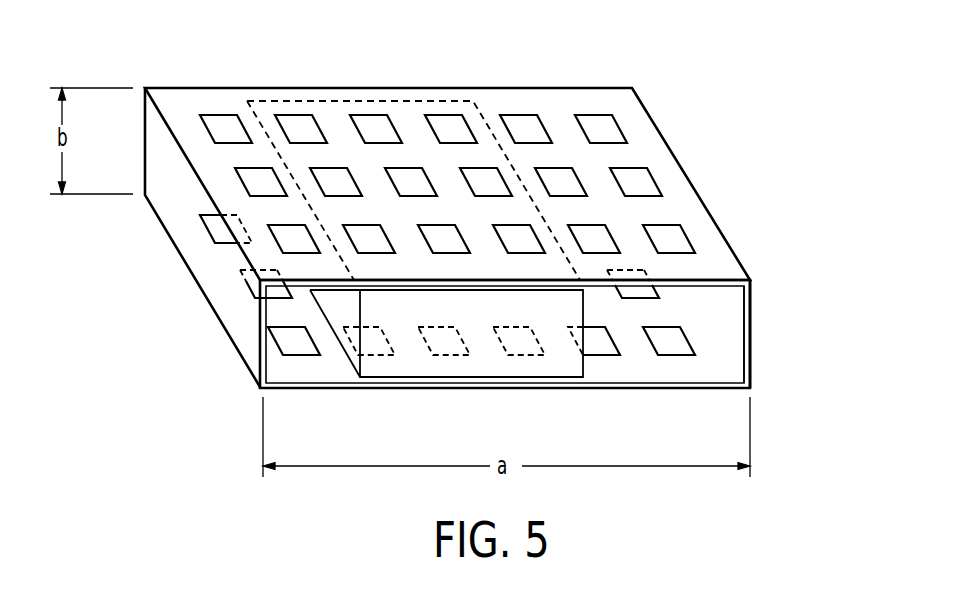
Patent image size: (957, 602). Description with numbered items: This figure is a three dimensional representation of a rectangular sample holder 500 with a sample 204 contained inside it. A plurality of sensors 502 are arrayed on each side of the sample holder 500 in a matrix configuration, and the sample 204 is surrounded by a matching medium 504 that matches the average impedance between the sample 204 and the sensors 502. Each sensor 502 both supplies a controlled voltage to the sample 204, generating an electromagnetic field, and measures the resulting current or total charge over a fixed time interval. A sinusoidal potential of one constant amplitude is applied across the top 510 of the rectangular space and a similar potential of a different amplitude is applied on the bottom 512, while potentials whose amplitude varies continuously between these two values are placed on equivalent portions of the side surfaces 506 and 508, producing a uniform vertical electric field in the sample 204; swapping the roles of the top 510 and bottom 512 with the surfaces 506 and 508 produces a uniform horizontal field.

The sample holder 500 is at (457, 241).
The sensors 502 is at (297, 122).
The matching medium 504 is at (735, 363).
The surface 506 is at (752, 327).
The surface 508 is at (165, 203).
The top 510 is at (720, 253).
The bottom 512 is at (366, 386).
The sample 204 is at (560, 367).